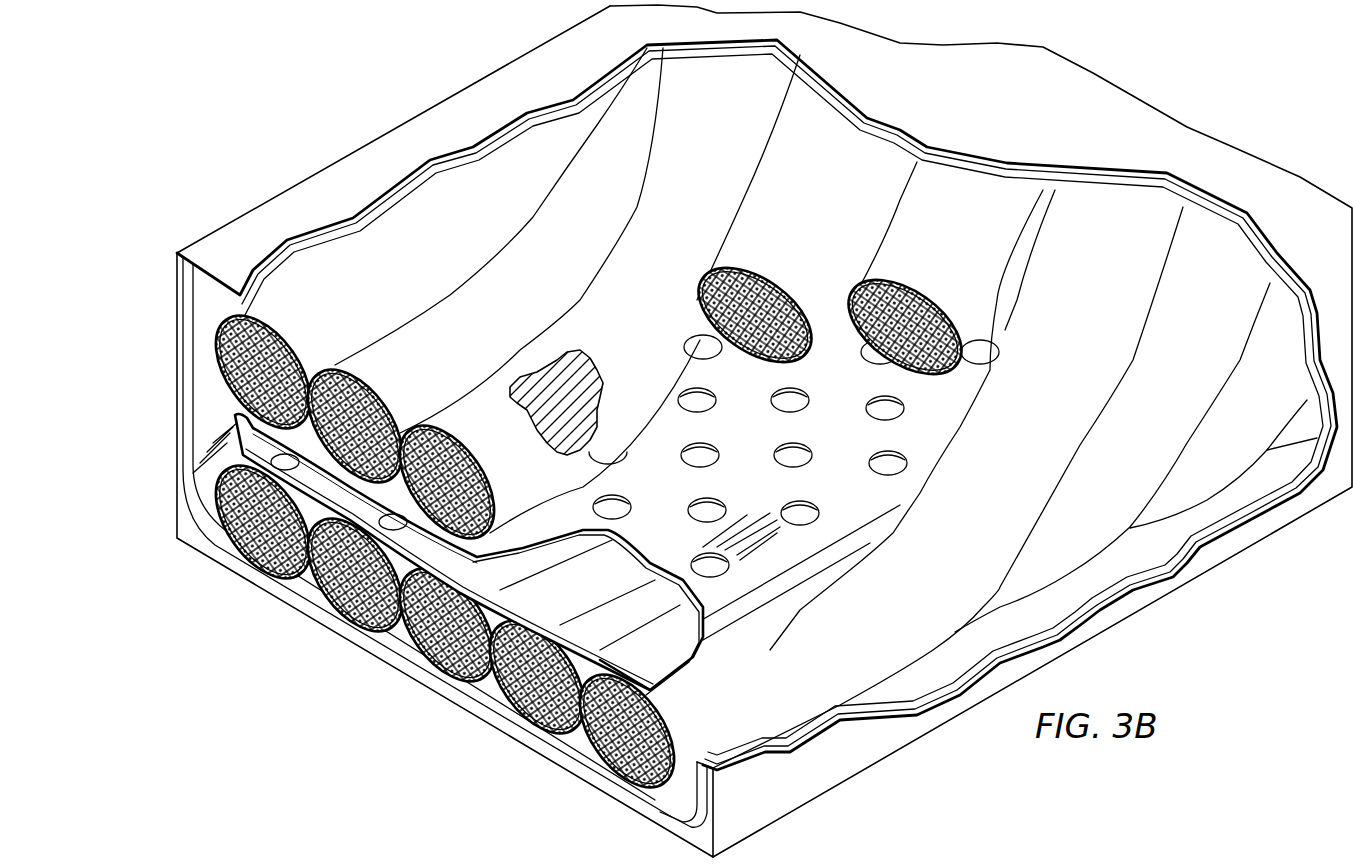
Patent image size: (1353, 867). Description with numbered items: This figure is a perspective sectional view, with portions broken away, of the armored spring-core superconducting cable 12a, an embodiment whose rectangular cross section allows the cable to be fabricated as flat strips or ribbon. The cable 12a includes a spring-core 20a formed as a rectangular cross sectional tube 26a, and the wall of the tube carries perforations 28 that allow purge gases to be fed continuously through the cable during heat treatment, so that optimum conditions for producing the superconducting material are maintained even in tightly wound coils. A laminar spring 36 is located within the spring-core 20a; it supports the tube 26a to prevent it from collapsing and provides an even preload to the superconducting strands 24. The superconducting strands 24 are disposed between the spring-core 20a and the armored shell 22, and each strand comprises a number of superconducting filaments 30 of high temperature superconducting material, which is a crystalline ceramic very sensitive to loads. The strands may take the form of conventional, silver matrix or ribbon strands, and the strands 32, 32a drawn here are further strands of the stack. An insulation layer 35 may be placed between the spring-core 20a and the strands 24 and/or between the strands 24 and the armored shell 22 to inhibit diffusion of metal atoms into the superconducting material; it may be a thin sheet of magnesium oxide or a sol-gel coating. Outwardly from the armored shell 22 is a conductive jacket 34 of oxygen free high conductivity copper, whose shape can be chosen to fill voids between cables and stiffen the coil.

The armored spring-core superconducting cable 12a is at (1162, 622).
The conductive jacket 34 is at (187, 280).
The armored shell 22 is at (393, 655).
The perforations 28 is at (803, 503).
The superconducting filaments 30 is at (590, 353).
The insulation layer 35 is at (210, 473).
The cushion 32 is at (503, 707).
The end cushion 32a is at (620, 763).
The spring-core 20a is at (233, 427).
The laminar spring 36 is at (623, 567).
The rectangular cross sectional tube 26a is at (650, 690).
The superconducting strand 24 is at (230, 368).